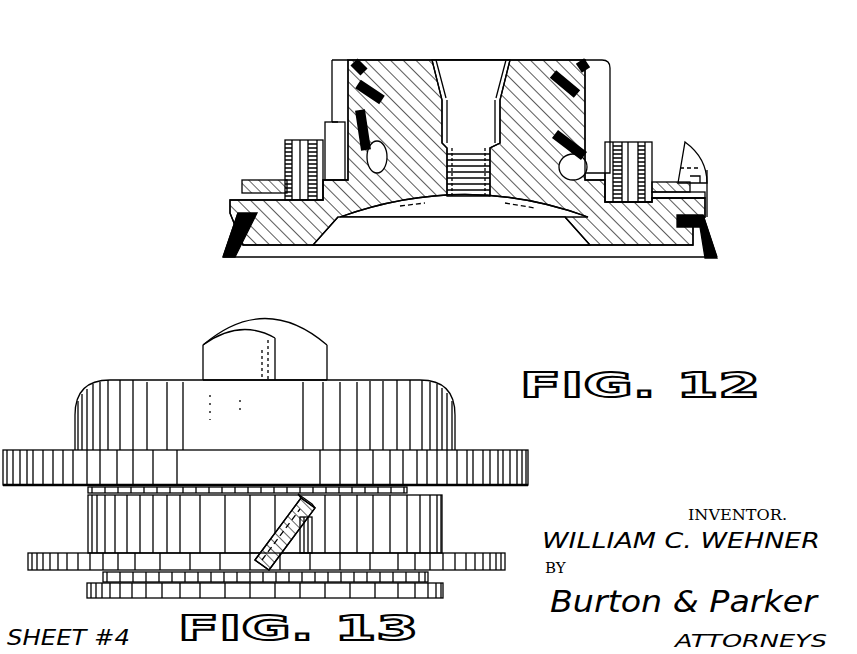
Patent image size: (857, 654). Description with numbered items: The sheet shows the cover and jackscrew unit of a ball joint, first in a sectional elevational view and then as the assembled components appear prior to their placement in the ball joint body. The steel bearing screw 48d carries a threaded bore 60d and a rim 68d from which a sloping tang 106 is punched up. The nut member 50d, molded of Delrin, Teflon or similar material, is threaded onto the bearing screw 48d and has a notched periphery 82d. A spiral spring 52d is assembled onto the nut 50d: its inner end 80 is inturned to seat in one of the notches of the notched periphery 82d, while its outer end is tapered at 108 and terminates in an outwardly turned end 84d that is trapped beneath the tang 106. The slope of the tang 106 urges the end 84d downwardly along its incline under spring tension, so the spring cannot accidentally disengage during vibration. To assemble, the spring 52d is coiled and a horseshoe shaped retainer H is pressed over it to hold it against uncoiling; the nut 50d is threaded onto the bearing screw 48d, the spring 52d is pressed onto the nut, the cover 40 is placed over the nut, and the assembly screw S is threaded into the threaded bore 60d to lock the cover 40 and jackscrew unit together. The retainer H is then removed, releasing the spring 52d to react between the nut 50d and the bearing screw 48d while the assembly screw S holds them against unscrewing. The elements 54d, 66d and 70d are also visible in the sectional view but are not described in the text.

In FIG. 12, the bearing screw 48d is at (527, 90).
In FIG. 12, the nut member 50d is at (577, 93).
In FIG. 13, the nut member 50d is at (88, 491).
In FIG. 12, the spring 52d is at (628, 140).
In FIG. 13, the spring 52d is at (422, 527).
In FIG. 12, the sealing flange 54d is at (415, 160).
In FIG. 12, the threaded bore 60d is at (486, 166).
In FIG. 12, the lower sealing ring 66d is at (277, 221).
In FIG. 13, the lower sealing ring 66d is at (428, 577).
In FIG. 12, the rim 68d is at (238, 214).
In FIG. 13, the rim 68d is at (50, 561).
In FIG. 12, the rim seal 70d is at (718, 244).
In FIG. 12, the inner end 80 is at (338, 126).
In FIG. 12, the notched periphery 82d is at (336, 80).
In FIG. 12, the outwardly turned end 84d is at (703, 181).
In FIG. 13, the outwardly turned end 84d is at (303, 531).
In FIG. 12, the sloping tang 106 is at (688, 144).
In FIG. 13, the sloping tang 106 is at (283, 505).
In FIG. 12, the tapered portion 108 is at (691, 182).
In FIG. 12, the horseshoe shaped retainer H is at (255, 178).
In FIG. 13, the assembly screw S is at (318, 357).
In FIG. 13, the cover 40 is at (425, 410).